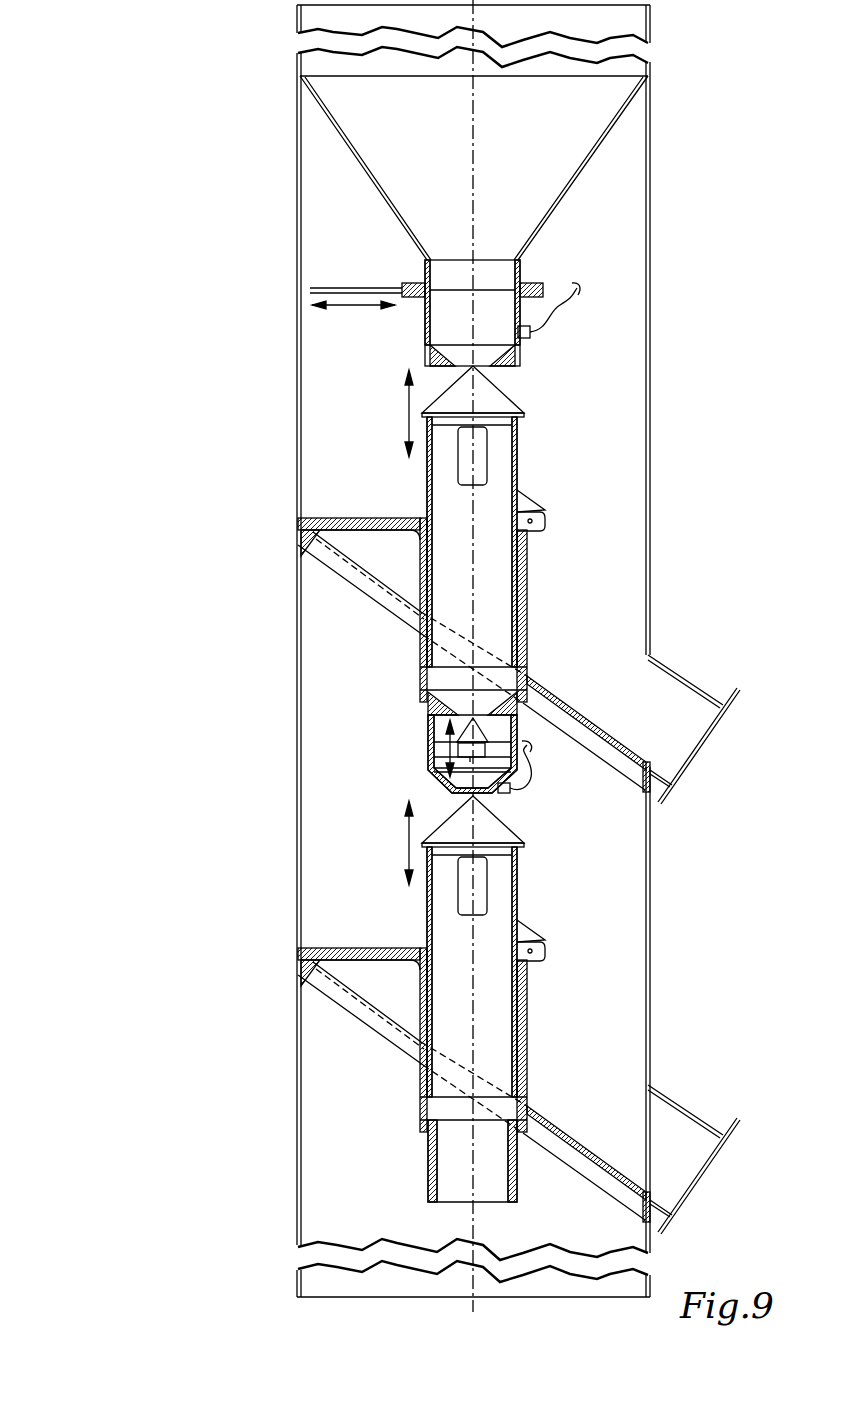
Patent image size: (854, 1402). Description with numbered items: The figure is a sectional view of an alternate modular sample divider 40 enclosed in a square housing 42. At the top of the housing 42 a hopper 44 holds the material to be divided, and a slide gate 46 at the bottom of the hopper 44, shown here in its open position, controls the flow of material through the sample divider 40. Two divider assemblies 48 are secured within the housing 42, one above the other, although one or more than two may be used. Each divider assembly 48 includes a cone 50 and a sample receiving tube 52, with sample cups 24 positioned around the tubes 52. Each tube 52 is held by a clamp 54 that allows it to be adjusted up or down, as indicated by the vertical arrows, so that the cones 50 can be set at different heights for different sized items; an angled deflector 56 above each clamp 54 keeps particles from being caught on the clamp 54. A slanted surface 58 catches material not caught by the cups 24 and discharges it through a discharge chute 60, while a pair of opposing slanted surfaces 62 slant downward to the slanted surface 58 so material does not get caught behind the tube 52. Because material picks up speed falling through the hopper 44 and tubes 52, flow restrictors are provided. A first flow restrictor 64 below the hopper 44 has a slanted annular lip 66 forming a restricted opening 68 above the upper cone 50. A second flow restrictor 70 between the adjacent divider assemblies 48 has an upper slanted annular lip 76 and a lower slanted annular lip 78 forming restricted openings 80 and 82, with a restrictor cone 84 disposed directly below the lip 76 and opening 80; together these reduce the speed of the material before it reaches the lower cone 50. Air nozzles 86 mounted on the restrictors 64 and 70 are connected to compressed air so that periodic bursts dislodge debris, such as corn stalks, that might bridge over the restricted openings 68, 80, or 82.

The sample cup 24 is at (480, 450).
The modular sample divider 40 is at (152, 238).
The housing 42 is at (297, 368).
The hopper 44 is at (352, 153).
The slide gate 46 is at (344, 288).
The divider assembly 48 is at (339, 514).
The cone 50 is at (492, 396).
The sample receiving tube 52 is at (517, 454).
The clamp 54 is at (537, 525).
The angled deflector 56 is at (530, 492).
The slanted surface 58 is at (362, 597).
The discharge chute 60 is at (686, 678).
The opposing slanted surface 62 is at (373, 548).
The first flow restrictor 64 is at (420, 329).
The slanted annular lip 66 is at (503, 350).
The restricted opening 68 is at (409, 413).
The second flow restrictor 70 is at (418, 734).
The upper slanted annular lip 76 is at (420, 650).
The lower slanted annular lip 78 is at (432, 789).
The restricted opening 80 is at (429, 722).
The restricted opening 82 is at (409, 839).
The restrictor cone 84 is at (489, 732).
The air nozzle 86 is at (531, 338).